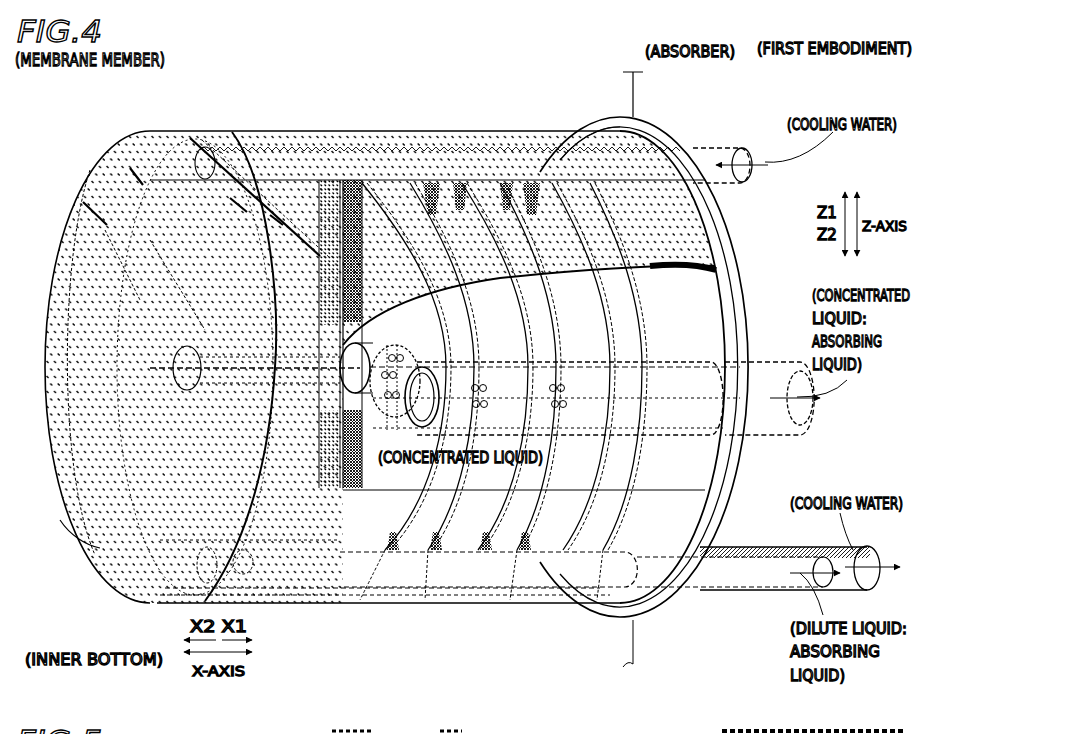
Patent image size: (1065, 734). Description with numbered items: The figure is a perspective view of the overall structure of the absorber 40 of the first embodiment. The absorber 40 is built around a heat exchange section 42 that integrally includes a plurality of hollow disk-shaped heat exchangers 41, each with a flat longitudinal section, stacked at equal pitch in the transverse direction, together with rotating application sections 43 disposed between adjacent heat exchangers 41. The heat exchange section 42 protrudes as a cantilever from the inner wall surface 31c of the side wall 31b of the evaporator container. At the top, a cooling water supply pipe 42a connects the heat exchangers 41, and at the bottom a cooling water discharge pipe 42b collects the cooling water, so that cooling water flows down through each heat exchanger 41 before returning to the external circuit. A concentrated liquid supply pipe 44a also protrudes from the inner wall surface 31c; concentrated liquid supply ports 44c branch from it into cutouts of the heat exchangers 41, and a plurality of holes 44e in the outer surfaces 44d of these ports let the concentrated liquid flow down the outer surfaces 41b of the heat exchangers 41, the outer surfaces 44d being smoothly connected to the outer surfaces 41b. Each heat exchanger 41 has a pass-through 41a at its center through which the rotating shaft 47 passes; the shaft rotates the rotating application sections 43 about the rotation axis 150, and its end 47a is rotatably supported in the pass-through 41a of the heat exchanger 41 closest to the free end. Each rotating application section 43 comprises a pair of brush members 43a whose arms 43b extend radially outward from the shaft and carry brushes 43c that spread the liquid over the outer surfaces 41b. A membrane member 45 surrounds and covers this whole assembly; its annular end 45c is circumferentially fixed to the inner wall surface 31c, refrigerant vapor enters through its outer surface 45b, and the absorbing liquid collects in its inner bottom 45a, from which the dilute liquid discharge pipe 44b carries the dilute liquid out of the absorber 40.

The absorber 40 is at (682, 108).
The side wall 31b is at (733, 238).
The inner wall surface 31c is at (590, 120).
The heat exchanger 41 is at (200, 230).
The pass-through 41a is at (363, 555).
The outer surface 41b is at (392, 553).
The heat exchange section 42 is at (172, 82).
The cooling water supply pipe 42a is at (712, 147).
The cooling water discharge pipe 42b is at (765, 547).
The rotating application section 43 is at (250, 200).
The brush member 43a is at (340, 545).
The arm 43b is at (350, 180).
The brush 43c is at (305, 200).
The concentrated liquid supply pipe 44a is at (762, 362).
The dilute liquid discharge pipe 44b is at (773, 578).
The concentrated liquid supply port 44c is at (518, 380).
The outer surface 44d is at (420, 344).
The hole 44e is at (402, 350).
The membrane member 45 is at (60, 236).
The inner bottom 45a is at (128, 606).
The outer surface 45b is at (143, 185).
The end 45c is at (740, 268).
The rotating shaft 47 is at (88, 545).
The end 47a is at (80, 532).
The rotation axis 150 is at (80, 185).